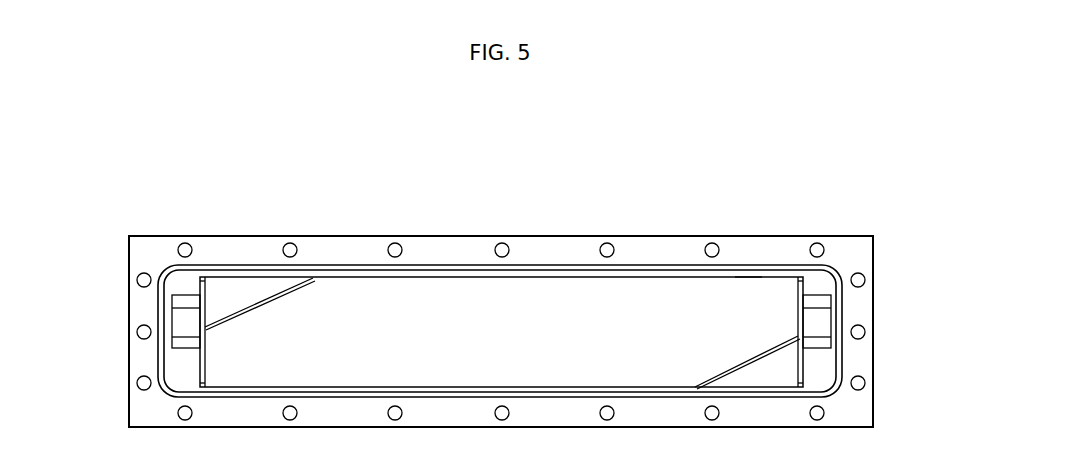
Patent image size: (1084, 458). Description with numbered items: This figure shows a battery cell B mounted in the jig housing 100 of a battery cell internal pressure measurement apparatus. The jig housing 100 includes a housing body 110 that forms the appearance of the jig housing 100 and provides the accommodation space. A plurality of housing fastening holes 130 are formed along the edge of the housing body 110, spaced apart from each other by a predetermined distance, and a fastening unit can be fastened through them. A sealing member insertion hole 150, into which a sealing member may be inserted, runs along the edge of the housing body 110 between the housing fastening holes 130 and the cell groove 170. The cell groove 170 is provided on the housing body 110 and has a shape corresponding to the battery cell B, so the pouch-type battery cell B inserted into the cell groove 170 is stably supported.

The jig housing 100 is at (252, 166).
The housing body 110 is at (532, 235).
The housing fastening hole 130 is at (395, 243).
The sealing member insertion hole 150 is at (452, 267).
The cell groove 170 is at (732, 278).
The battery cell B is at (644, 312).